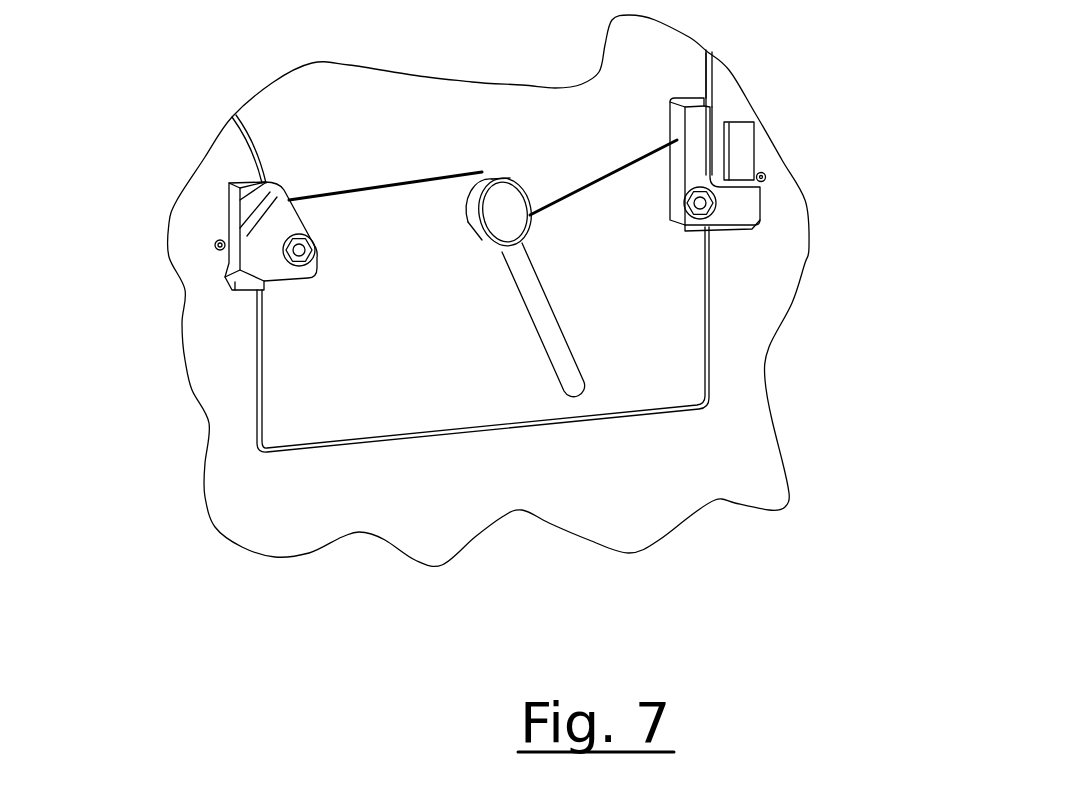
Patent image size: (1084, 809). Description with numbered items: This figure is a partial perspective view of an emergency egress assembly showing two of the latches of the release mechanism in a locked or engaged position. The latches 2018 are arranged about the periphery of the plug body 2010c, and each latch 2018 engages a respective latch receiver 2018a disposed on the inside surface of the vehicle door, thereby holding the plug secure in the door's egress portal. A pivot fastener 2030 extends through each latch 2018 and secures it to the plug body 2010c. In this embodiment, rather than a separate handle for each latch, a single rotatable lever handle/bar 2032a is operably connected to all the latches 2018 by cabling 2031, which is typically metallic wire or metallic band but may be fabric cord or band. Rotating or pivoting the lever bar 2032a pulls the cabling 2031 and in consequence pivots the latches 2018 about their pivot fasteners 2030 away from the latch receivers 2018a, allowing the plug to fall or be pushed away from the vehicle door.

The plug body 2010c is at (364, 426).
The latch 2018 is at (233, 285).
The latch receiver 2018a is at (230, 187).
The pivot fastener 2030 is at (303, 262).
The cabling 2031 is at (617, 168).
The rotatable lever handle/bar 2032a is at (550, 330).